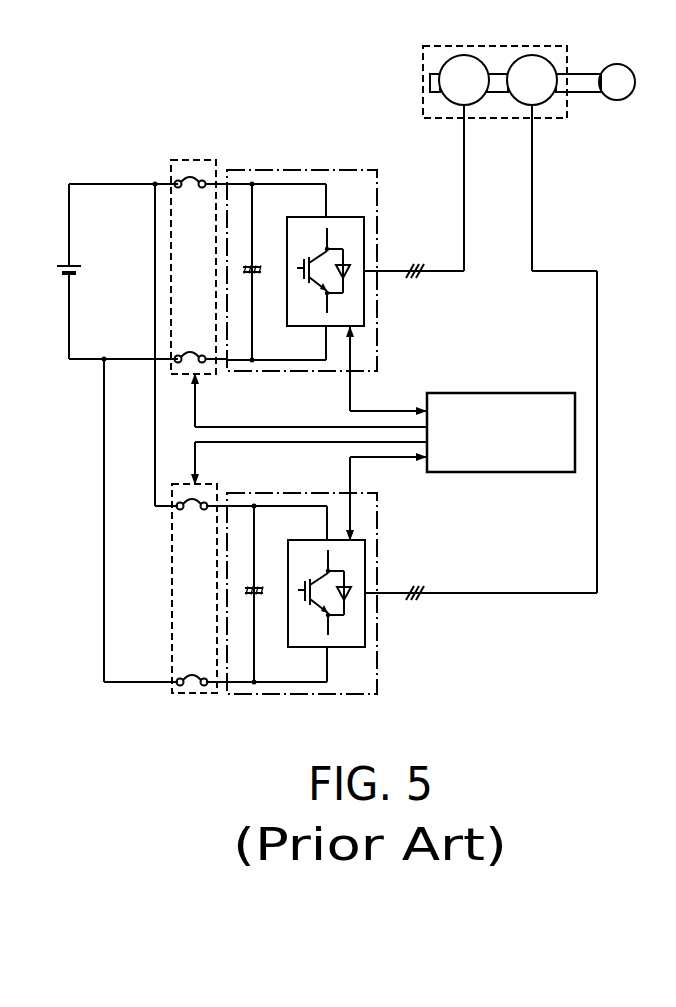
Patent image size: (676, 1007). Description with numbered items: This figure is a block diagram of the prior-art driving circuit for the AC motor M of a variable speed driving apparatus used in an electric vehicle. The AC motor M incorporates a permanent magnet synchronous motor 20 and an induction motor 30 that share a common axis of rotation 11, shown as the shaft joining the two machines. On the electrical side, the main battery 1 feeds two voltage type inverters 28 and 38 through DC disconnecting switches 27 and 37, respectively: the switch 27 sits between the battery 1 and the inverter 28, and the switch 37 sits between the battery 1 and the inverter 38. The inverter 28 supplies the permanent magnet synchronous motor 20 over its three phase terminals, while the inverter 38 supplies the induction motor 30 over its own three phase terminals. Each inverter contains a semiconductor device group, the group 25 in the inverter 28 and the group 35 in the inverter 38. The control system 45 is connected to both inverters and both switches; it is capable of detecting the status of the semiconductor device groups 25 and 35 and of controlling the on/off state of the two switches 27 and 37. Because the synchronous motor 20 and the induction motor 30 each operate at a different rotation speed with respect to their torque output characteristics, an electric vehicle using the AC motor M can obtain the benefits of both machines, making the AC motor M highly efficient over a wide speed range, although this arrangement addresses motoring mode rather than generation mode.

The main battery 1 is at (78, 263).
The common axis of rotation 11 is at (582, 74).
The permanent magnet synchronous motor 20 is at (449, 106).
The induction motor 30 is at (549, 107).
The AC motor M is at (457, 46).
The semiconductor device group 25 is at (366, 243).
The DC disconnecting switch 27 is at (197, 160).
The inverter 28 is at (329, 270).
The semiconductor device group 35 is at (367, 570).
The DC disconnecting switch 37 is at (214, 484).
The inverter 38 is at (337, 593).
The control system 45 is at (516, 393).